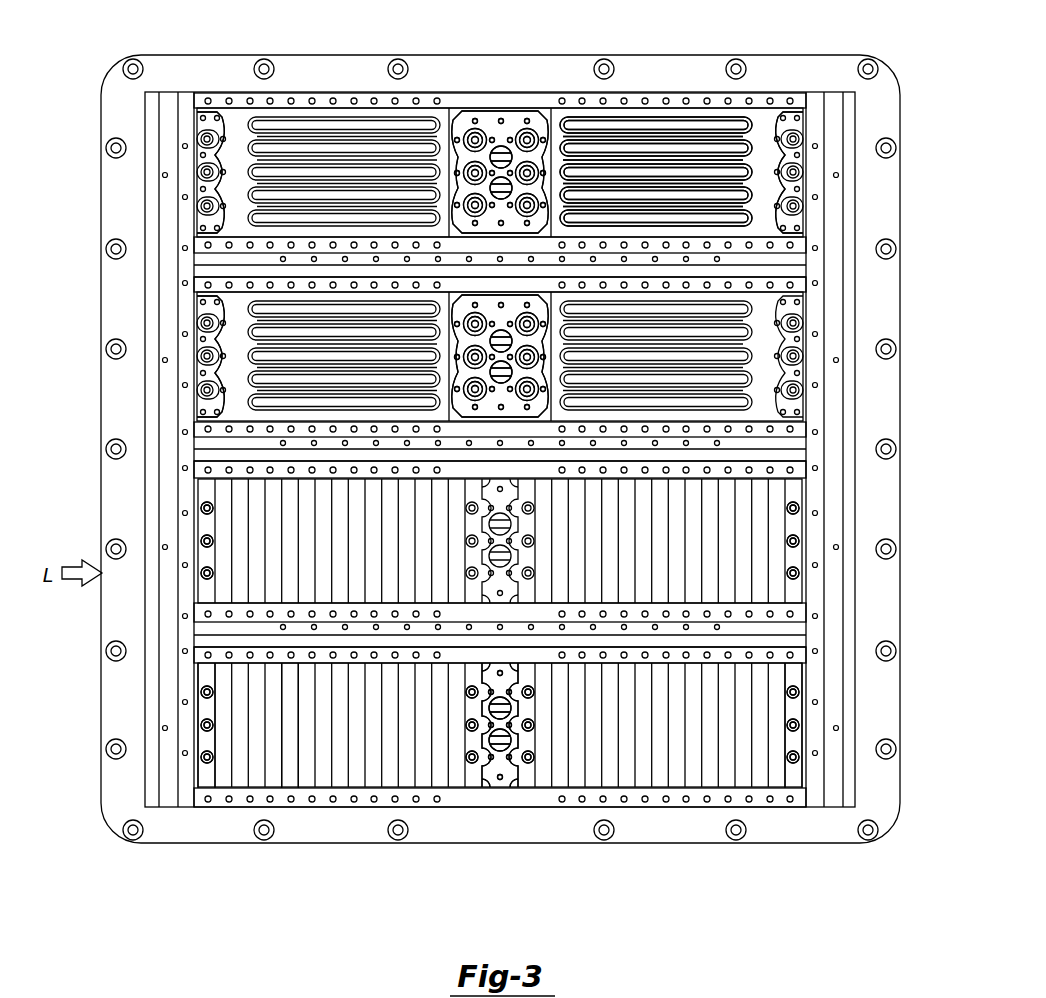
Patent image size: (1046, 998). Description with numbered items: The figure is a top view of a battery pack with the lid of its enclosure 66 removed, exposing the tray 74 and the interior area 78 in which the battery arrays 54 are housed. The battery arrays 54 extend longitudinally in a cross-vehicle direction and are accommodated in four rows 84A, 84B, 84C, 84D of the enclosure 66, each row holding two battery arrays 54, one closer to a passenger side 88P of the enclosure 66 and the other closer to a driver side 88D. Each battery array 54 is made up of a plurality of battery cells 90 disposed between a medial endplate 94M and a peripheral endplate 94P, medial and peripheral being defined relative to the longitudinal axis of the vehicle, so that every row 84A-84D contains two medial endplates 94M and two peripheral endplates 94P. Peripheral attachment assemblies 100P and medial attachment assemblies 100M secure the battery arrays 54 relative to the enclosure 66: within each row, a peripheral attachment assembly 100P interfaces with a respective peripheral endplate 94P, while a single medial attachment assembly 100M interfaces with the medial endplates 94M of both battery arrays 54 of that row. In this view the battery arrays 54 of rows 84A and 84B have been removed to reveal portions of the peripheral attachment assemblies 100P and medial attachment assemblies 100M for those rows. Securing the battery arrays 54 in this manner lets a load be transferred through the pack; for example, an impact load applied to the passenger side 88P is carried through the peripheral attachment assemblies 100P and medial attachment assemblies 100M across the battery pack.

The battery array 54 is at (222, 527).
The enclosure 66 is at (688, 827).
The tray 74 is at (214, 827).
The interior area 78 is at (632, 170).
The row 84A is at (85, 133).
The row 84B is at (85, 316).
The row 84C is at (88, 502).
The row 84D is at (86, 687).
The passenger side 88P is at (85, 405).
The driver side 88D is at (912, 406).
The battery cell 90 is at (285, 780).
The medial endplate 94M is at (472, 786).
The peripheral endplate 94P is at (206, 773).
The medial attachment assembly 100M is at (540, 304).
The peripheral attachment assembly 100P is at (242, 328).